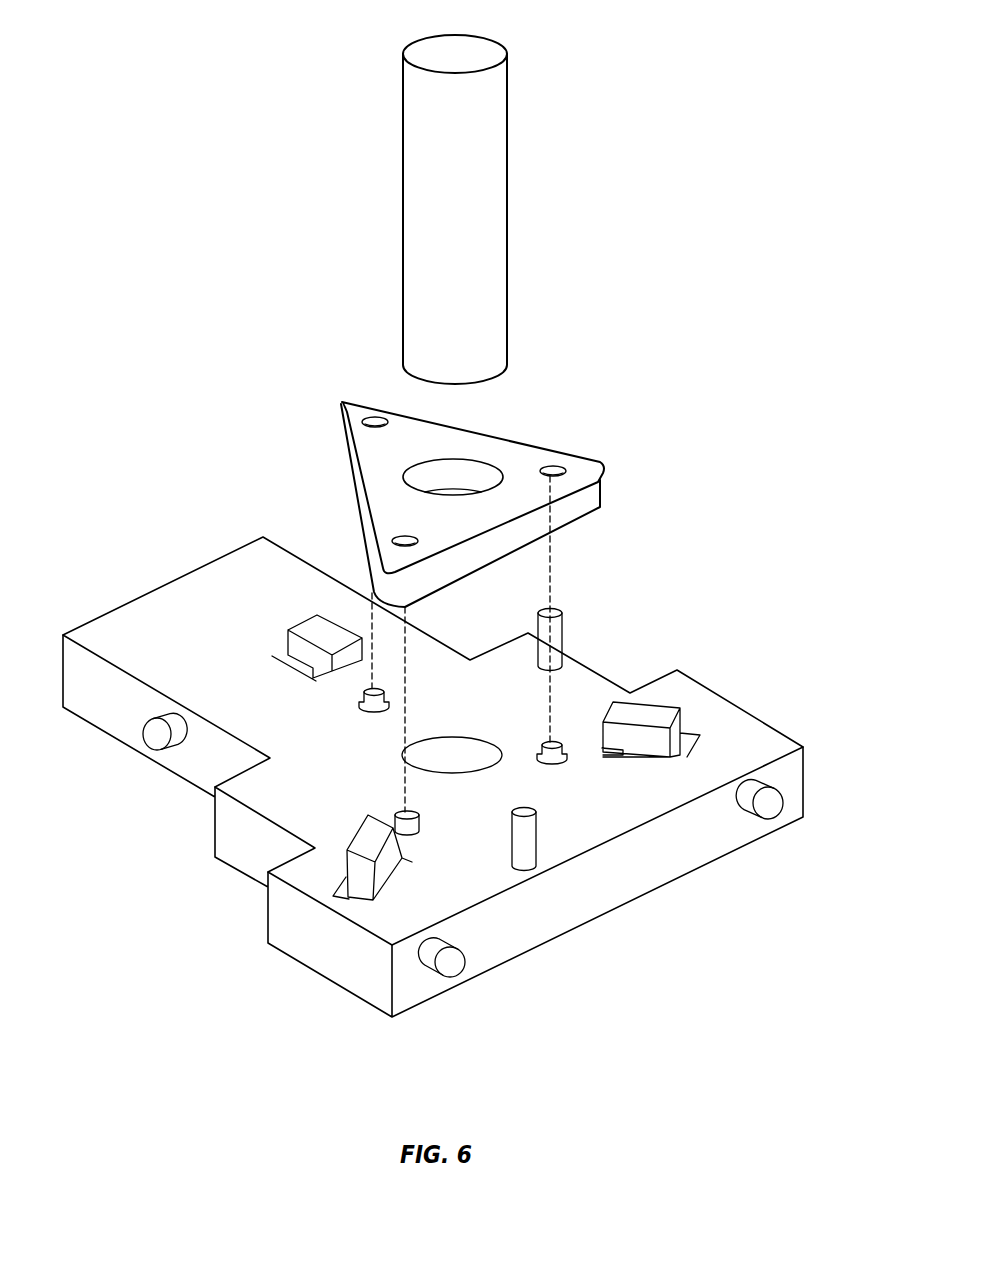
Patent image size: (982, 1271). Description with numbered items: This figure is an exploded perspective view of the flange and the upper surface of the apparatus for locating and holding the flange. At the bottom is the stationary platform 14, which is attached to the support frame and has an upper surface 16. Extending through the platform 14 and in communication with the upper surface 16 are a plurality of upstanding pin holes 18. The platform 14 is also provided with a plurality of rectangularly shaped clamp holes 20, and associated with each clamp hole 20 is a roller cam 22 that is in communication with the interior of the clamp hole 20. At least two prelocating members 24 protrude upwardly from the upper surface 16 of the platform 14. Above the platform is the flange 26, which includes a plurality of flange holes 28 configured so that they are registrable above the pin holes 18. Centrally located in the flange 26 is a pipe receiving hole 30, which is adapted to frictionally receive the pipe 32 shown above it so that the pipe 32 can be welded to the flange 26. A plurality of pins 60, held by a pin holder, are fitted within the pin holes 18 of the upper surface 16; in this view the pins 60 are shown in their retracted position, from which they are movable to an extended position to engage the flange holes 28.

The stationary platform 14 is at (421, 629).
The upper surface 16 is at (183, 594).
The pin holes 18 is at (360, 700).
The clamp holes 20 is at (287, 654).
The roller cam 22 is at (160, 740).
The prelocating members 24 is at (563, 638).
The flange 26 is at (343, 436).
The flange holes 28 is at (373, 418).
The pipe receiving hole 30 is at (418, 478).
The pipe 32 is at (404, 230).
The pins 60 is at (380, 690).